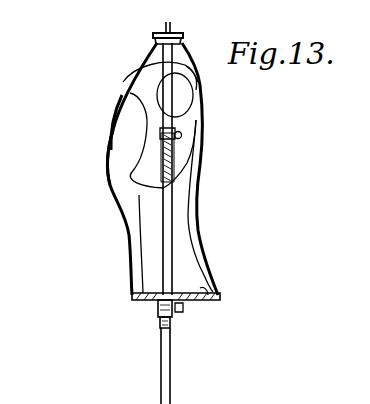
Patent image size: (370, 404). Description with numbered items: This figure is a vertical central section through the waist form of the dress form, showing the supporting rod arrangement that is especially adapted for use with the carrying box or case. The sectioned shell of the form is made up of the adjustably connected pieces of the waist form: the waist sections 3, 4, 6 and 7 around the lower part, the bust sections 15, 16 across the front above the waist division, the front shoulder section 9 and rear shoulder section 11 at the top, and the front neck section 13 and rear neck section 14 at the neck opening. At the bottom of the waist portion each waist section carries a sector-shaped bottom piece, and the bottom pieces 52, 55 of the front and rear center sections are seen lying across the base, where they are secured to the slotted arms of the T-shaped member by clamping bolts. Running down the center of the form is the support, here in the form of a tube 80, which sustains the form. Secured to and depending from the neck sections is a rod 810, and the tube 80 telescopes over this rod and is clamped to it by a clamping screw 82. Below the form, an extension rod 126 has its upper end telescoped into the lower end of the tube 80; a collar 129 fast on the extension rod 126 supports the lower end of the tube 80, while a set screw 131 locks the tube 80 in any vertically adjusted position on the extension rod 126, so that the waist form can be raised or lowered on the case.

The waist section 3 is at (143, 258).
The waist section 4 is at (134, 282).
The waist section 6 is at (193, 250).
The waist section 7 is at (215, 265).
The front shoulder section 9 is at (147, 125).
The rear shoulder section 11 is at (190, 115).
The front neck section 13 is at (157, 58).
The rear neck section 14 is at (193, 72).
The bust section 15 is at (122, 151).
The bust section 16 is at (107, 170).
The bottom piece 52 is at (142, 301).
The bottom piece 55 is at (197, 295).
The tube 80 is at (178, 192).
The clamping screw 82 is at (181, 135).
The rod 810 is at (147, 83).
The extension rod 126 is at (170, 345).
The collar 129 is at (157, 318).
The set screw 131 is at (183, 306).